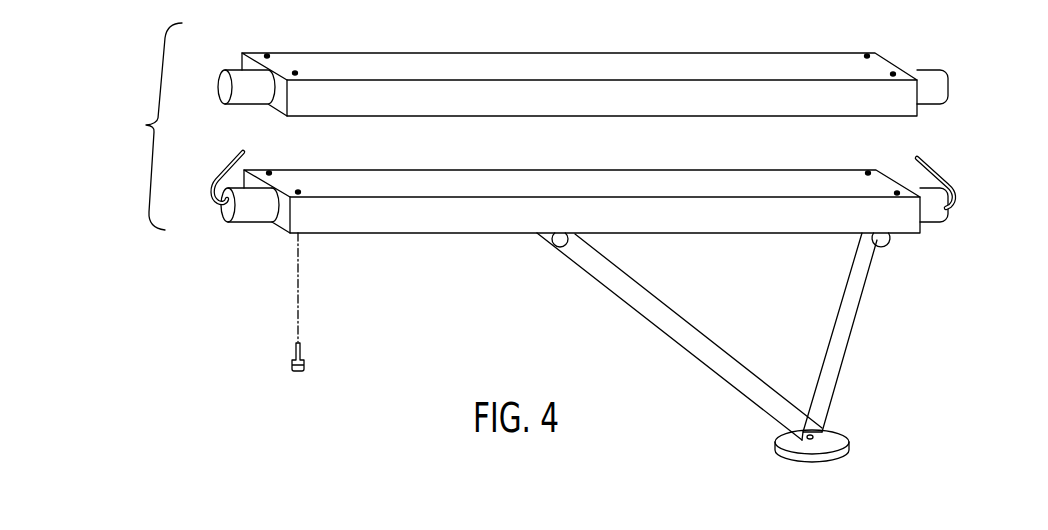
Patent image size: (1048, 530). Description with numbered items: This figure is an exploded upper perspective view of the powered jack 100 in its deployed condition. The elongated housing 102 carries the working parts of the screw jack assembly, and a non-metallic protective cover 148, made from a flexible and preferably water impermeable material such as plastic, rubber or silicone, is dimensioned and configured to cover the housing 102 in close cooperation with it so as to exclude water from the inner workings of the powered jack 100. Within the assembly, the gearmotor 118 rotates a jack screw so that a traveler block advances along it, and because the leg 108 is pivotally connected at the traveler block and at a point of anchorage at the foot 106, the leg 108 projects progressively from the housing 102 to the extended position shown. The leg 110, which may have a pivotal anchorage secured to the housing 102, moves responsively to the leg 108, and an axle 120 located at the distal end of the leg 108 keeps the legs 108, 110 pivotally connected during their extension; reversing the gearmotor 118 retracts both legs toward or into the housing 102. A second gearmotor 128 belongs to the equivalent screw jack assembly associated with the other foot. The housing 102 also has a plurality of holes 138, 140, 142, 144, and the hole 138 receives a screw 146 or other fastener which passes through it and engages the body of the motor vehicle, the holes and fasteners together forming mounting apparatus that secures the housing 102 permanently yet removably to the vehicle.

The powered jack 100 is at (147, 126).
The protective cover 148 is at (524, 48).
The housing 102 is at (571, 175).
The gearmotor 118 is at (238, 236).
The gearmotor 128 is at (953, 236).
The hole 140 is at (270, 171).
The hole 138 is at (299, 191).
The hole 142 is at (867, 172).
The hole 144 is at (897, 191).
The screw 146 is at (290, 356).
The leg 108 is at (673, 338).
The leg 110 is at (852, 335).
The foot 106 is at (843, 462).
The axle 120 is at (778, 438).